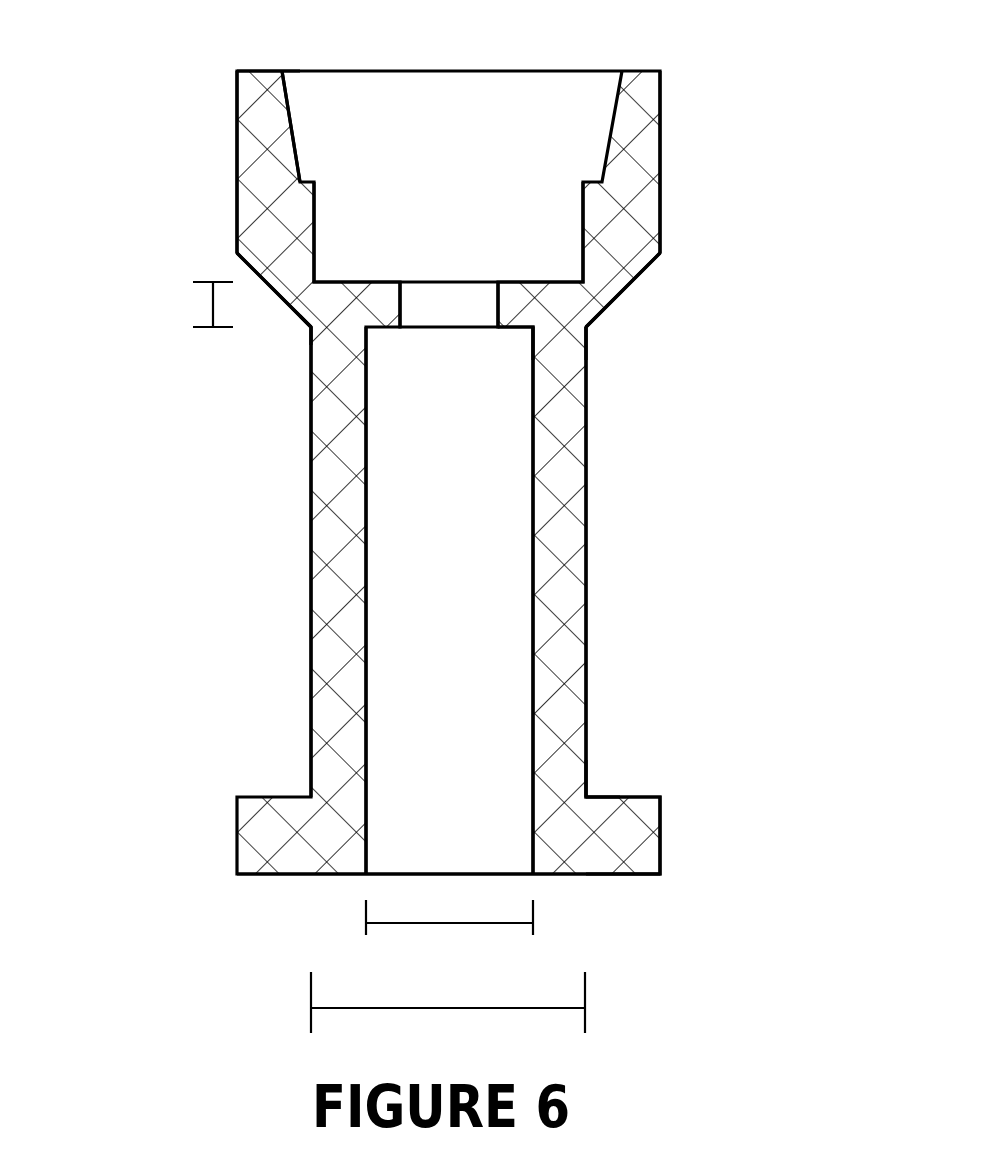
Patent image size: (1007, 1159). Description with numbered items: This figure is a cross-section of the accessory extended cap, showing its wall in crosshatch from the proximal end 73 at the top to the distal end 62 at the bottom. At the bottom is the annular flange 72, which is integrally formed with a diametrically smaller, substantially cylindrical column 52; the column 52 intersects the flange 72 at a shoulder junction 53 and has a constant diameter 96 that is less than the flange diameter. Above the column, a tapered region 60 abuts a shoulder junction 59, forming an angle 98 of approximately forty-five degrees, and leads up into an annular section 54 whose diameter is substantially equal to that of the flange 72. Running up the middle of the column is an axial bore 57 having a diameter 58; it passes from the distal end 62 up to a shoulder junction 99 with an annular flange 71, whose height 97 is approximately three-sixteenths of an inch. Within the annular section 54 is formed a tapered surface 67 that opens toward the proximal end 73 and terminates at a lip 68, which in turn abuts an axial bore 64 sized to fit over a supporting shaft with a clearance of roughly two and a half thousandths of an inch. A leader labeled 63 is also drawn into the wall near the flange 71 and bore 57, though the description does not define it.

The cylindrical column 52 is at (589, 411).
The shoulder junction 53 is at (586, 790).
The annular section 54 is at (662, 136).
The axial bore 57 is at (453, 483).
The diameter 58 is at (450, 923).
The shoulder junction 59 is at (590, 327).
The tapered region 60 is at (645, 271).
The distal end 62 is at (660, 873).
The channel 63 is at (430, 305).
The axial bore 64 is at (310, 233).
The tapered surface 67 is at (288, 115).
The lip 68 is at (300, 181).
The annular flange 71 is at (312, 338).
The annular flange 72 is at (660, 835).
The proximal end 73 is at (250, 70).
The diameter 96 is at (410, 1008).
The height 97 is at (213, 303).
The angle 98 is at (247, 265).
The shoulder junction 99 is at (533, 327).